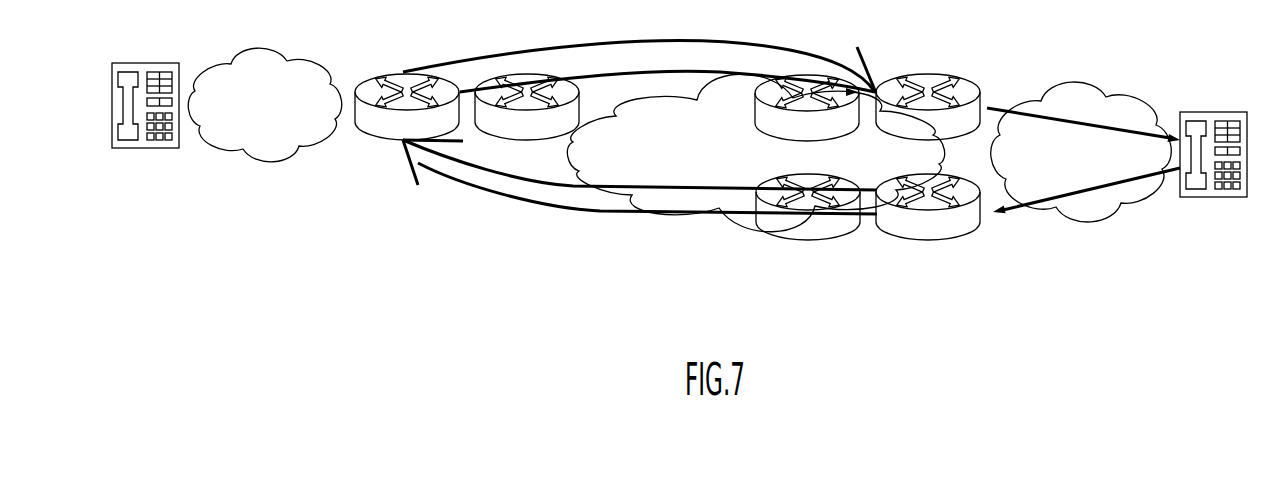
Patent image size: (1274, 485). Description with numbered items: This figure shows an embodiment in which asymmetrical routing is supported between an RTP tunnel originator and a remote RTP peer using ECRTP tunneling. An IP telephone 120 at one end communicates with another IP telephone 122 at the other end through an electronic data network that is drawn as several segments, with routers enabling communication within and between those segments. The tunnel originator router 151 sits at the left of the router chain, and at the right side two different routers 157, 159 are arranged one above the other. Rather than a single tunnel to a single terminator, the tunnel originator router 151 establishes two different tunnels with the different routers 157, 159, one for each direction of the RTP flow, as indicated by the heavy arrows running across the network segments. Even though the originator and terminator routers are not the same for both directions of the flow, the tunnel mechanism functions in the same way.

The IP telephone 120 is at (145, 63).
The IP telephone 122 is at (1213, 112).
The tunnel originator router 151 is at (382, 140).
The router 157 is at (927, 73).
The router 159 is at (930, 238).